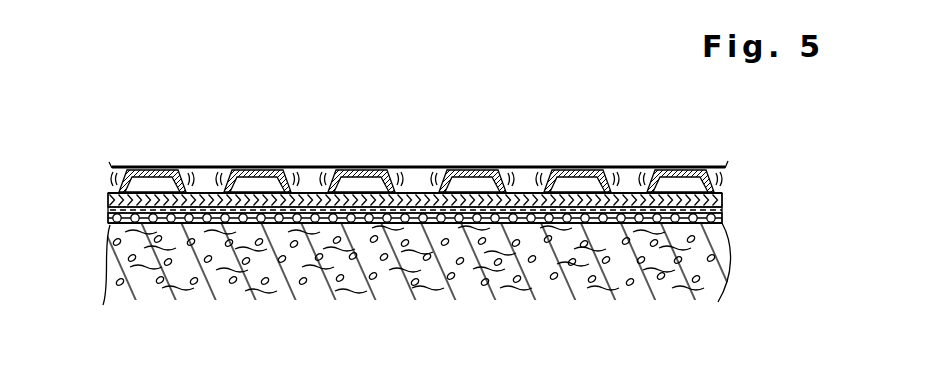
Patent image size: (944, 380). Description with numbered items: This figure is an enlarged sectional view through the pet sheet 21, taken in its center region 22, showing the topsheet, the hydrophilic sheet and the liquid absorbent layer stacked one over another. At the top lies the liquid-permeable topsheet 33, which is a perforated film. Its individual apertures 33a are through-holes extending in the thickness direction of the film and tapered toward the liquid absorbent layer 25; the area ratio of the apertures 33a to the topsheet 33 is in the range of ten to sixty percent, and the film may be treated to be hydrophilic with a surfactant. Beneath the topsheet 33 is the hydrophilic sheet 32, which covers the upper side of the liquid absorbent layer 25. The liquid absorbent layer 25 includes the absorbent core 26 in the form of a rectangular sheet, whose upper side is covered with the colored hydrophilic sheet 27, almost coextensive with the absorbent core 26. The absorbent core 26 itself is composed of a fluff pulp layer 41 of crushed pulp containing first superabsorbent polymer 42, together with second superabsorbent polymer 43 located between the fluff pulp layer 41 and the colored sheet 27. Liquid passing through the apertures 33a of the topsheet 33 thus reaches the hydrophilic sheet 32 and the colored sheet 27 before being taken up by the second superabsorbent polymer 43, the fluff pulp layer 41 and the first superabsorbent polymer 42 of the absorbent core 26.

The pet sheet 21 is at (580, 107).
The center region 22 is at (316, 154).
The hydrophilic sheet 32 is at (203, 205).
The topsheet 33 is at (218, 167).
The apertures 33a is at (415, 175).
The second superabsorbent polymer 43 is at (108, 220).
The colored hydrophilic sheet 27 is at (723, 206).
The liquid absorbent layer 25 is at (788, 203).
The absorbent core 26 is at (715, 267).
The fluff pulp layer 41 is at (125, 252).
The first superabsorbent polymer 42 is at (147, 281).